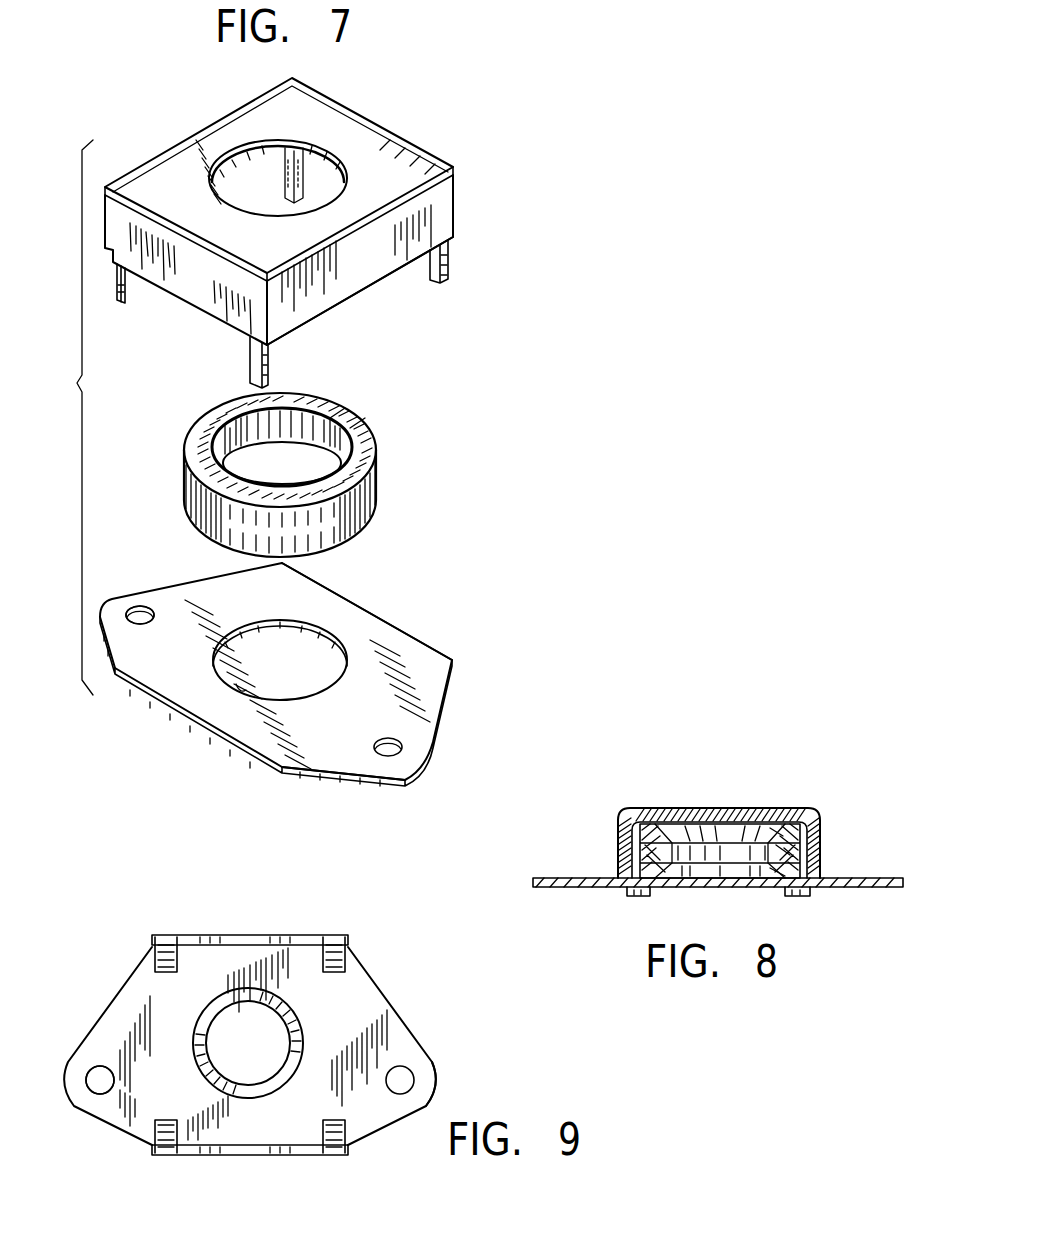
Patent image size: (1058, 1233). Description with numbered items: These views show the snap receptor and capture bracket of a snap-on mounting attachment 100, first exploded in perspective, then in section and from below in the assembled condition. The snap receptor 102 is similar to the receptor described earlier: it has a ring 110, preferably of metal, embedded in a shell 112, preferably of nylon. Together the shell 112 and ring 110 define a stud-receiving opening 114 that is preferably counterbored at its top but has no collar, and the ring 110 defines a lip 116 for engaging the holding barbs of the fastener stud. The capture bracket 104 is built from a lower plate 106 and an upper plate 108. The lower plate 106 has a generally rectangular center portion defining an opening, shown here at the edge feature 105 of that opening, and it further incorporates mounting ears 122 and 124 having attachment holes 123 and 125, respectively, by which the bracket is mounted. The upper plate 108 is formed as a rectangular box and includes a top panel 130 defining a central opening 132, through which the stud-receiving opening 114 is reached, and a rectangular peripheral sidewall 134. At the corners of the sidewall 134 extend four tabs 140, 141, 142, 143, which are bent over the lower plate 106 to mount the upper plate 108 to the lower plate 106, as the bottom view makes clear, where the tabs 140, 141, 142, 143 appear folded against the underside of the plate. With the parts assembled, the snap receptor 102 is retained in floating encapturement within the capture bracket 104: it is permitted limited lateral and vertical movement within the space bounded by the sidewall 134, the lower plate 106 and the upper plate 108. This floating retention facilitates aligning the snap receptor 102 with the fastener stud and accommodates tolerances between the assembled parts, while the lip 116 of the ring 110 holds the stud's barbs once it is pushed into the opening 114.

In FIG. 7, the inductor assembly 100 is at (500, 323).
In FIG. 8, the inductor assembly 100 is at (718, 779).
In FIG. 9, the inductor assembly 100 is at (407, 996).
In FIG. 7, the snap receptor 102 is at (386, 491).
In FIG. 7, the capture bracket 104 is at (400, 619).
In FIG. 8, the capture bracket 104 is at (597, 890).
In FIG. 7, the notch 105 is at (237, 688).
In FIG. 7, the lower plate 106 is at (330, 620).
In FIG. 9, the lower plate 106 is at (113, 997).
In FIG. 7, the upper plate 108 is at (404, 122).
In FIG. 8, the upper plate 108 is at (614, 827).
In FIG. 7, the ring 110 is at (313, 447).
In FIG. 8, the ring 110 is at (647, 823).
In FIG. 7, the shell 112 is at (362, 448).
In FIG. 8, the shell 112 is at (793, 828).
In FIG. 7, the stud-receiving opening 114 is at (268, 478).
In FIG. 8, the stud-receiving opening 114 is at (735, 845).
In FIG. 8, the lip 116 is at (767, 867).
In FIG. 7, the mounting ear 122 is at (167, 600).
In FIG. 9, the mounting ear 122 is at (103, 1053).
In FIG. 7, the attachment hole 123 is at (140, 622).
In FIG. 9, the attachment hole 123 is at (90, 1088).
In FIG. 7, the mounting ear 124 is at (358, 737).
In FIG. 9, the mounting ear 124 is at (408, 1100).
In FIG. 7, the attachment hole 125 is at (395, 752).
In FIG. 9, the attachment hole 125 is at (409, 1083).
In FIG. 7, the top panel 130 is at (304, 127).
In FIG. 7, the central opening 132 is at (245, 142).
In FIG. 7, the rectangular peripheral sidewall 134 is at (380, 267).
In FIG. 7, the tab 140 is at (124, 288).
In FIG. 9, the tab 140 is at (153, 945).
In FIG. 7, the tab 141 is at (263, 363).
In FIG. 9, the tab 141 is at (160, 1153).
In FIG. 7, the tab 142 is at (448, 262).
In FIG. 9, the tab 142 is at (352, 1150).
In FIG. 9, the tab 143 is at (347, 953).